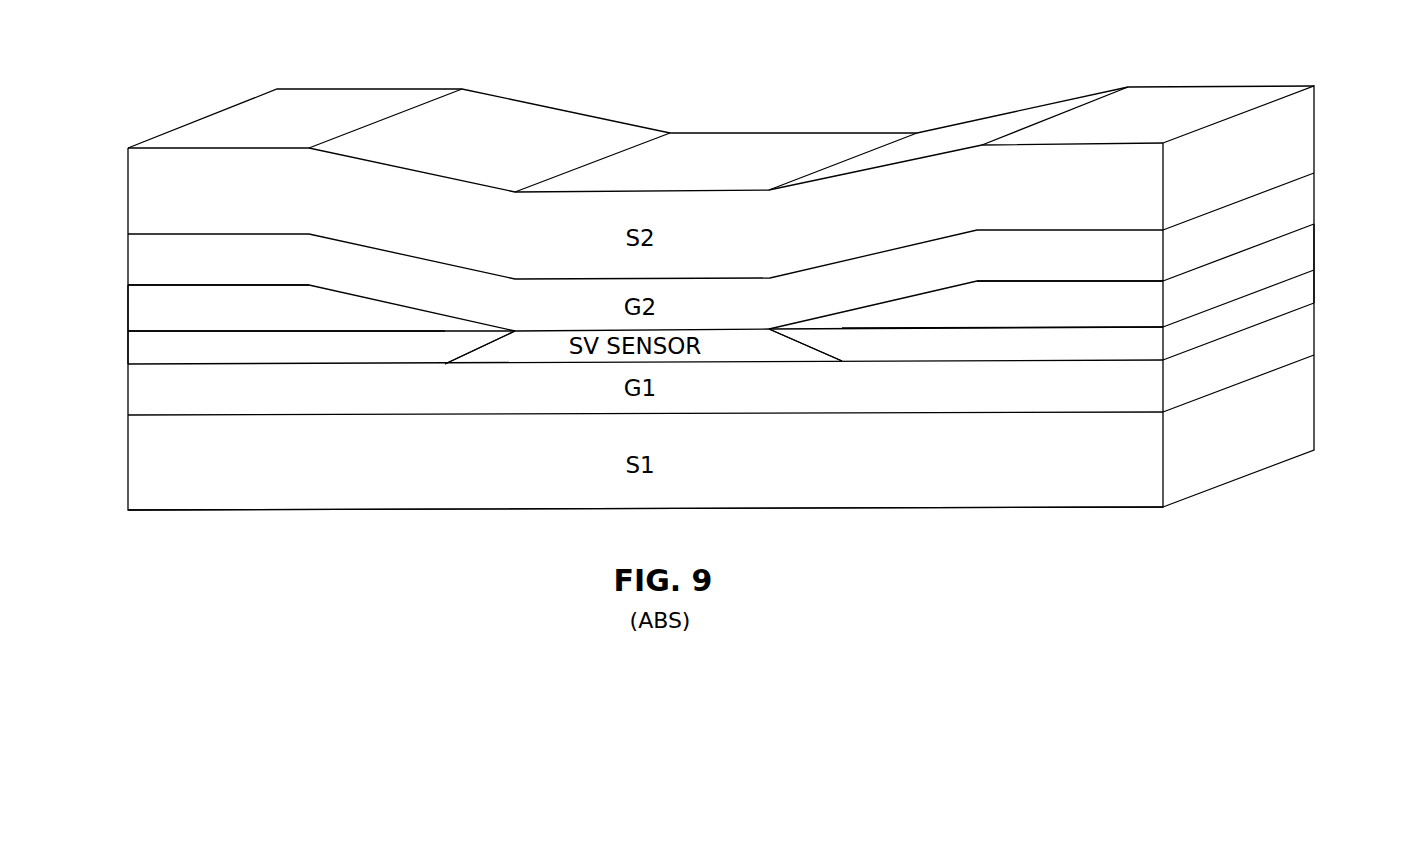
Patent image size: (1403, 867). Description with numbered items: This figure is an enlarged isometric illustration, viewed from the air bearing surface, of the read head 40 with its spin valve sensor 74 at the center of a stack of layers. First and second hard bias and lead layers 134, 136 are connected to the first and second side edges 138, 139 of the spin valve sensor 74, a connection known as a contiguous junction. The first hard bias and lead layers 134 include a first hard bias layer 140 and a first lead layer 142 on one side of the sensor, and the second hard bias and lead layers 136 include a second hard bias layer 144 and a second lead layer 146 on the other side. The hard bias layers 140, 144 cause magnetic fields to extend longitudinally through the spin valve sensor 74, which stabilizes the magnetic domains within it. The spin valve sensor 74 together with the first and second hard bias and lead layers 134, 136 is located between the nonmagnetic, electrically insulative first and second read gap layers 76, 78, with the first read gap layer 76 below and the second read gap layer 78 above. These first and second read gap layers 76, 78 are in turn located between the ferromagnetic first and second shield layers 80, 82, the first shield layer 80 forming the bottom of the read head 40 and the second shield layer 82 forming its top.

The read head 40 is at (818, 86).
The second shield layer 82 is at (571, 123).
The second read gap layer 78 is at (375, 265).
The spin valve sensor 74 is at (553, 318).
The first read gap layer 76 is at (524, 405).
The first shield layer 80 is at (302, 490).
The first side edge 138 is at (467, 350).
The second side edge 139 is at (825, 352).
The first hard bias and lead layers 134 is at (121, 285).
The second hard bias and lead layers 136 is at (1322, 223).
The first hard bias layer 140 is at (173, 350).
The first lead layer 142 is at (171, 298).
The second hard bias layer 144 is at (1110, 345).
The second lead layer 146 is at (1110, 293).